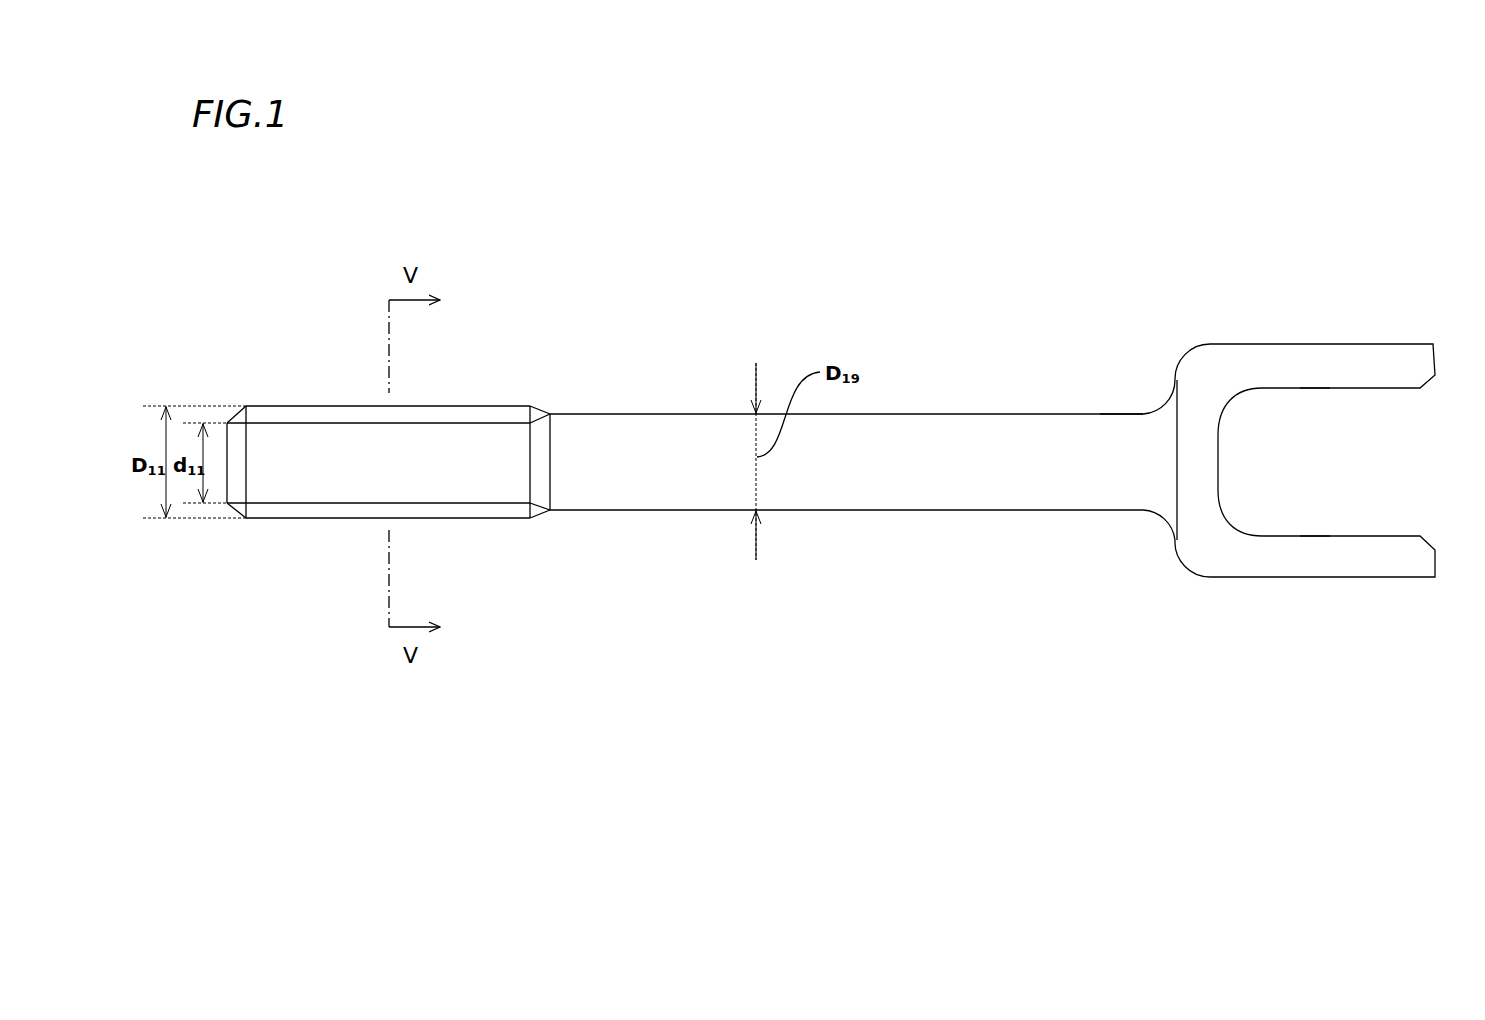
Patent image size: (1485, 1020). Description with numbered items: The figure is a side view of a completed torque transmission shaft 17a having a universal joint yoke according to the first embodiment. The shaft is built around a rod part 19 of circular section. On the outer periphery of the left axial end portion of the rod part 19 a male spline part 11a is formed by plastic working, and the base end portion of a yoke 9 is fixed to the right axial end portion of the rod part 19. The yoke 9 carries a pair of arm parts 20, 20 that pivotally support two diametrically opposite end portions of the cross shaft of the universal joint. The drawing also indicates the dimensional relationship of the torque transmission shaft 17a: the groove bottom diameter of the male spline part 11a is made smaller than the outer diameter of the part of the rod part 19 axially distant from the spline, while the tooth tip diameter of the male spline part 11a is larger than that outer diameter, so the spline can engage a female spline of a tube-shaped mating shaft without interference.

The yoke 9 is at (1377, 358).
The male spline part 11a is at (495, 503).
The torque transmission shaft having a universal joint yoke 17a is at (935, 403).
The rod part 19 is at (962, 497).
The arm parts 20 is at (1313, 388).